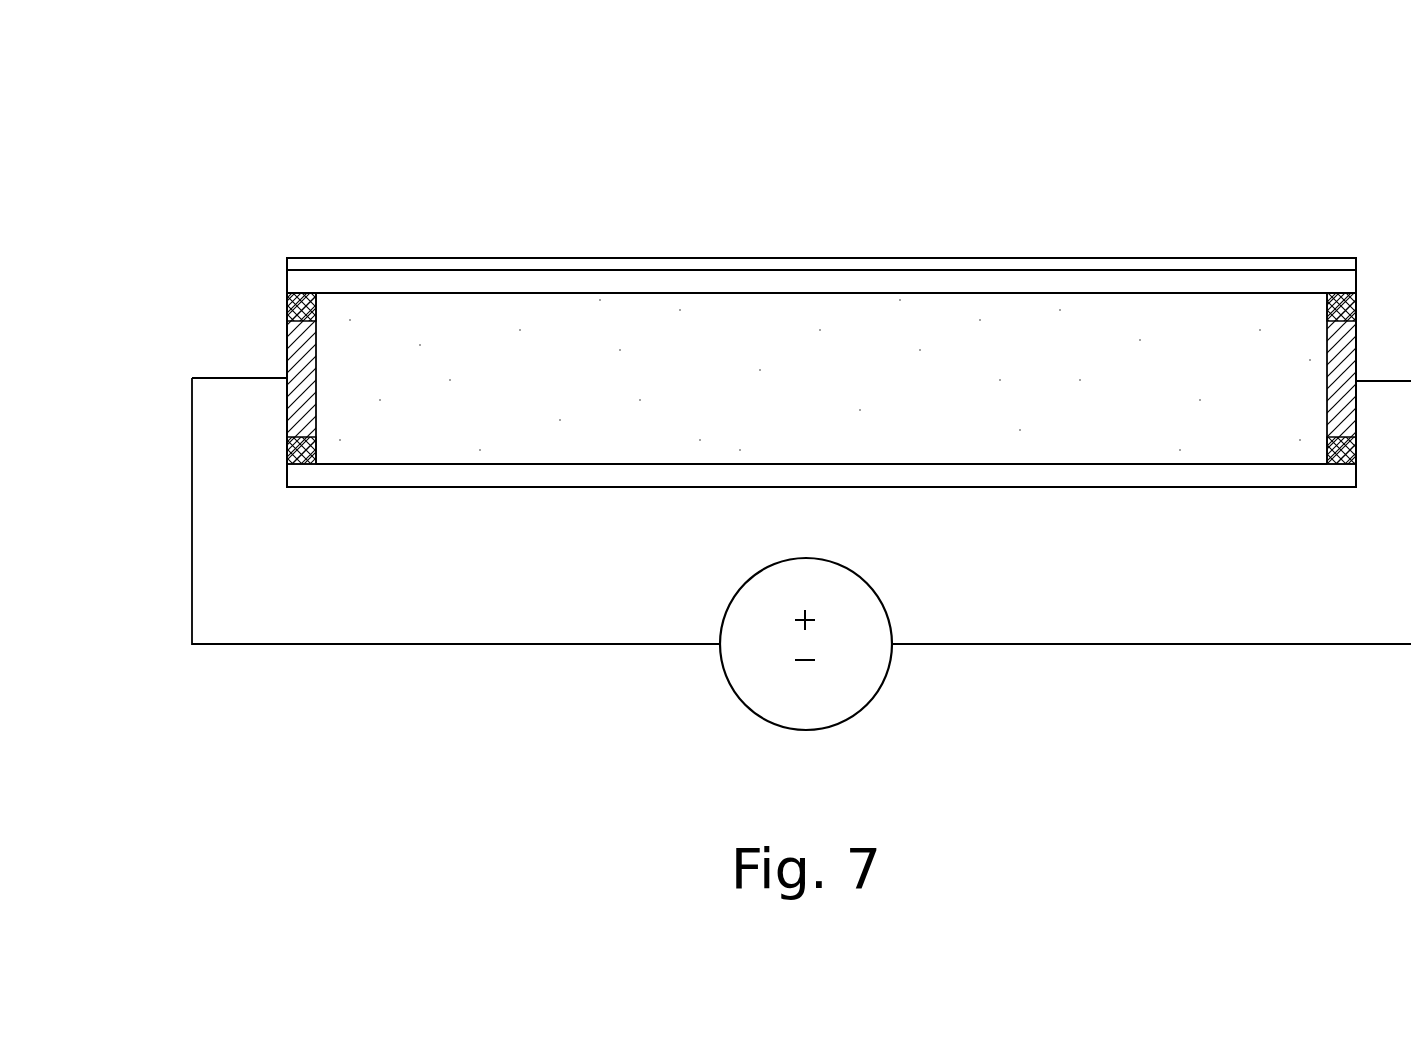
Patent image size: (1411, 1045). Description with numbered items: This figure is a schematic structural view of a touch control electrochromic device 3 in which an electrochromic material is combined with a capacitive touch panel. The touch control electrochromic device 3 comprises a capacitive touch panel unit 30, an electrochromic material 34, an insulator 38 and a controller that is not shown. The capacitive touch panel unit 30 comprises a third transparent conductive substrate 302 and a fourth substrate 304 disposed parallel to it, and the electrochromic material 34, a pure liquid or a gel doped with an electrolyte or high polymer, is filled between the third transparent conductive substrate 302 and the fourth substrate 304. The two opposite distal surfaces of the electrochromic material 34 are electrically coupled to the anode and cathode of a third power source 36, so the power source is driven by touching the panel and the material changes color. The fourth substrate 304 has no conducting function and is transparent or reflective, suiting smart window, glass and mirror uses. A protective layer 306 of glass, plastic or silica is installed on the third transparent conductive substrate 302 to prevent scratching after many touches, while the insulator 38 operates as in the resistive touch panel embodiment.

The touch control electrochromic device 3 is at (226, 86).
The capacitive touch panel unit 30 is at (538, 163).
The third transparent conductive substrate 302 is at (755, 287).
The fourth substrate 304 is at (584, 475).
The protective layer 306 is at (930, 263).
The electrochromic material 34 is at (360, 310).
The third power source 36 is at (847, 698).
The insulator 38 is at (288, 312).